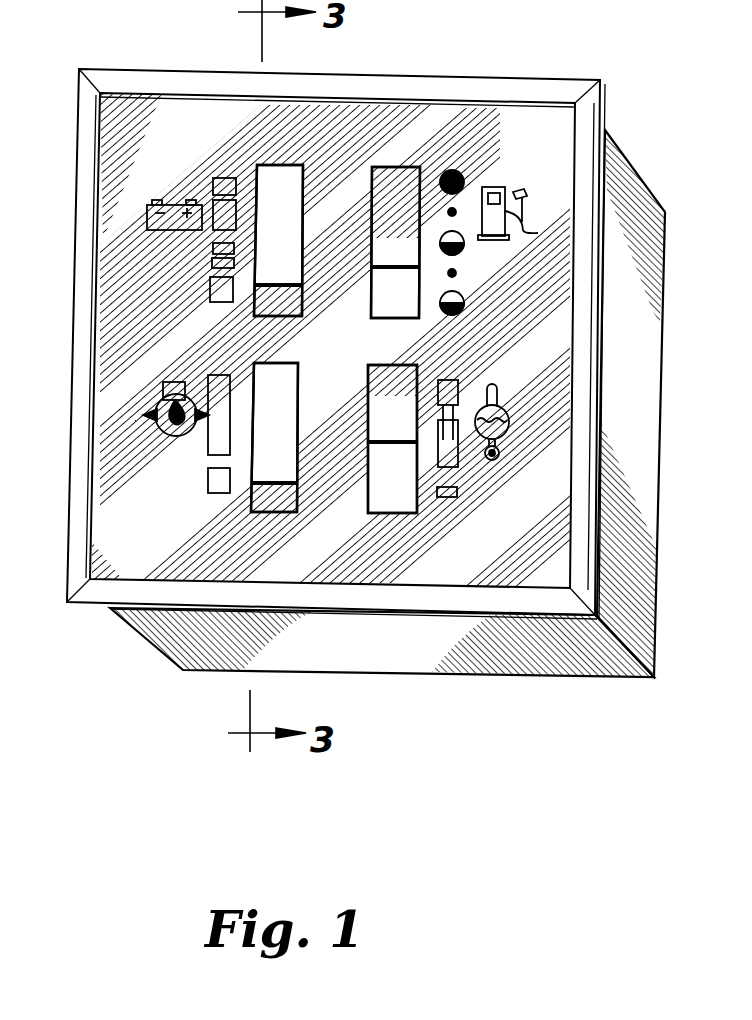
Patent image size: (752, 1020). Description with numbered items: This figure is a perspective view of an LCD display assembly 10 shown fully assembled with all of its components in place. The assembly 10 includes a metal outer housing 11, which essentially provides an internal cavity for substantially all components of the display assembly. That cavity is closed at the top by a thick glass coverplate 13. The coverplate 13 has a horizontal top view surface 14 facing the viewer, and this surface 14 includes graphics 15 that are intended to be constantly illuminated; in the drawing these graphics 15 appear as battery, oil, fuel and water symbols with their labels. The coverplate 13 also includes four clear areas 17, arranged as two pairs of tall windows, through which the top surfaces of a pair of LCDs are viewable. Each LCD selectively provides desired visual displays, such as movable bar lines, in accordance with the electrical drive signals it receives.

The LCD display assembly 10 is at (466, 814).
The metal outer housing 11 is at (494, 642).
The top thick glass coverplate 13 is at (103, 563).
The horizontal top view surface 14 is at (120, 93).
The graphics 15 is at (146, 256).
The clear areas 17 is at (372, 201).